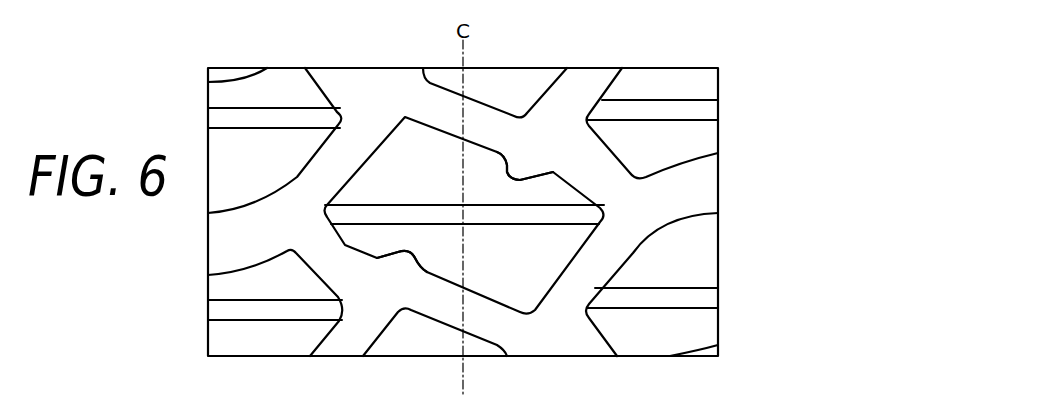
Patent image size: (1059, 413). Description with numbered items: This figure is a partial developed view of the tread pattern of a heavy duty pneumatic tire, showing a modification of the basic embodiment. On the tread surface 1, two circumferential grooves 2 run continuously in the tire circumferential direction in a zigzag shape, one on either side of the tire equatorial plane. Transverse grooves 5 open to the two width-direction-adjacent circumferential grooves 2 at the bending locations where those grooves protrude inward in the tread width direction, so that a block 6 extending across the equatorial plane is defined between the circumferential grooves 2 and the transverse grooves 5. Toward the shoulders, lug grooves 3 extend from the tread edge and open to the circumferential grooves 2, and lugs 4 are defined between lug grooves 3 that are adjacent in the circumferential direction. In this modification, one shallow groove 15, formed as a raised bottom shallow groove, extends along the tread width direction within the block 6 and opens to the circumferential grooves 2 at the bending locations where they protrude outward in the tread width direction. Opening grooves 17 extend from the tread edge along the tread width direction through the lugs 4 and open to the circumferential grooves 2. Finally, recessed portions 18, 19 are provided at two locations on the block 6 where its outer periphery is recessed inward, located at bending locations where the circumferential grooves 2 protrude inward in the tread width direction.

The tread surface 1 is at (604, 46).
The circumferential grooves 2 is at (350, 340).
The lug grooves 3 is at (214, 245).
The lugs 4 is at (259, 174).
The transverse grooves 5 is at (477, 109).
The block 6 is at (424, 180).
The shallow groove 15 is at (507, 217).
The opening grooves 17 is at (219, 117).
The recessed portion 18 is at (517, 173).
The recessed portion 19 is at (413, 258).